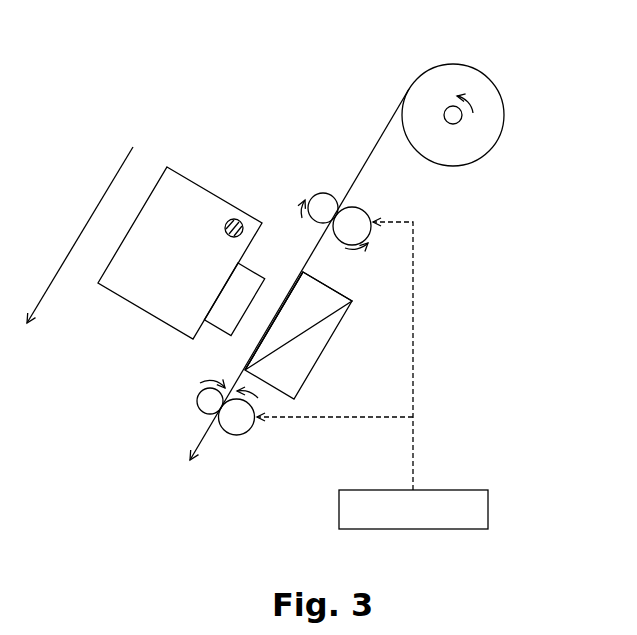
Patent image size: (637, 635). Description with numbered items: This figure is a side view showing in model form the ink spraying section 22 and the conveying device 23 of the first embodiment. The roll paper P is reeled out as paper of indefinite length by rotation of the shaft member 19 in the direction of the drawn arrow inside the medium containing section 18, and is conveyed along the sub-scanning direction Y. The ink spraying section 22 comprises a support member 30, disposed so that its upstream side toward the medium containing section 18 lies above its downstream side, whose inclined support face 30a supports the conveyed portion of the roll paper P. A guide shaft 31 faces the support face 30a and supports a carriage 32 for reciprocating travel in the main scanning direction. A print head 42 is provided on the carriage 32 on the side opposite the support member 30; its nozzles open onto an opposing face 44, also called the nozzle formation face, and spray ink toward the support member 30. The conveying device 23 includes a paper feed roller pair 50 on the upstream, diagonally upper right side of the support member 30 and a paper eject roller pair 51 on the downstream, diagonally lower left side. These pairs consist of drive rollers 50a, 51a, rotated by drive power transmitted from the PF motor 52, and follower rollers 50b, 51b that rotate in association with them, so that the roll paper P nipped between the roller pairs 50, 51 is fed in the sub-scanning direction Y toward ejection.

The medium containing section 18 is at (365, 85).
The roll paper P is at (386, 128).
The shaft member 19 is at (462, 118).
The carriage 32 is at (181, 171).
The guide shaft 31 is at (240, 218).
The print head 42 is at (230, 282).
The opposing face 44 is at (243, 322).
The support member 30 is at (315, 320).
The support face 30a is at (289, 287).
The ink spraying section 22 is at (127, 332).
The paper feed roller pair 50 is at (389, 209).
The drive roller 50a is at (363, 205).
The follower roller 50b is at (330, 185).
The paper eject roller pair 51 is at (168, 411).
The drive roller 51a is at (230, 423).
The follower roller 51b is at (197, 397).
The paper feed motor 52 is at (452, 489).
The conveying device 23 is at (285, 502).
The sub-scanning direction Y is at (71, 247).